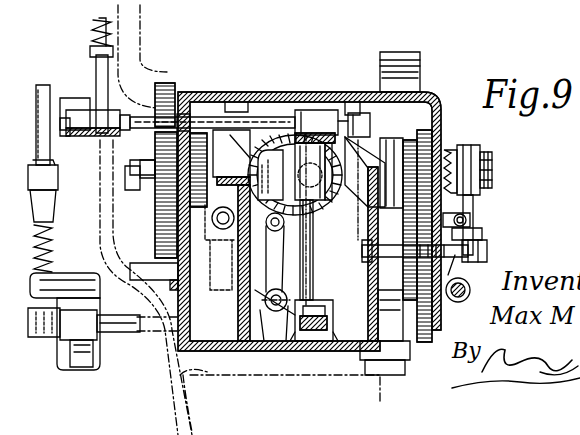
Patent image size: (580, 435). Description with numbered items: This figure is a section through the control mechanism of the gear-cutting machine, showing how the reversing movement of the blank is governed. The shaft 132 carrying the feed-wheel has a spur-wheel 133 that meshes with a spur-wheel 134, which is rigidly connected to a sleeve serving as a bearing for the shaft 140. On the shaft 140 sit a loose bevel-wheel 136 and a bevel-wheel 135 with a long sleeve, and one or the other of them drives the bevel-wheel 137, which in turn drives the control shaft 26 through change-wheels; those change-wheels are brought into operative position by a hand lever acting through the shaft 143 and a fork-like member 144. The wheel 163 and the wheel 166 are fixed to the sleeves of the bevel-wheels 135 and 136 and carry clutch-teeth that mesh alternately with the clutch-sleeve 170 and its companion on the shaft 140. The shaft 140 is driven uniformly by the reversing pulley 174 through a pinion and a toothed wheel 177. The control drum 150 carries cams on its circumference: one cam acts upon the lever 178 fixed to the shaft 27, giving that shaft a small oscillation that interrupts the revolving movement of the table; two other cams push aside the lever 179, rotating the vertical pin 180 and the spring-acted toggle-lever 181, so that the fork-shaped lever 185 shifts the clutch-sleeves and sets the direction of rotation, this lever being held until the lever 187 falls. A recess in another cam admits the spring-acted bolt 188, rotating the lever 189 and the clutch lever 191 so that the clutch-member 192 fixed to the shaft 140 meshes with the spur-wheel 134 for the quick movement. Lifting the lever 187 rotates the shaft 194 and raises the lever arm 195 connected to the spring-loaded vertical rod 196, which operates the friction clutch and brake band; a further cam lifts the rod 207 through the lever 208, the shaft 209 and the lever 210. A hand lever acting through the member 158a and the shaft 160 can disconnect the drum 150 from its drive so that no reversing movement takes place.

The vertical rod 196 is at (97, 71).
The lever arm 195 is at (92, 140).
The shaft 194 is at (218, 118).
The wheel 166 is at (170, 100).
The fork-like member 144 is at (155, 237).
The shaft 26 is at (155, 213).
The toothed wheel 177 is at (157, 192).
The rod 207 is at (50, 246).
The lever 208 is at (47, 338).
The shaft 209 is at (123, 335).
The shaft 143 is at (150, 283).
The lever 178 is at (240, 300).
The shaft 27 is at (276, 312).
The vertical pin 180 is at (332, 220).
The lever 181 is at (320, 330).
The lever 210 is at (290, 348).
The bevel-wheel 137 is at (270, 140).
The bevel-wheel 136 is at (260, 145).
The clutch-sleeve 170 is at (296, 130).
The lever 179 is at (322, 145).
The lever 185 is at (302, 110).
The lever 187 is at (355, 113).
The bevel-wheel 135 is at (380, 145).
The pulley 174 is at (410, 52).
The wheel 163 is at (412, 140).
The spur-wheel 134 is at (425, 140).
The bolt 188 is at (393, 252).
The clutch lever 191 is at (463, 150).
The clutch-member 192 is at (490, 157).
The shaft 140 is at (493, 170).
The shaft 160 is at (470, 216).
The member 158a is at (482, 237).
The lever 189 is at (488, 253).
The spur-wheel 133 is at (432, 322).
The shaft 132 is at (396, 332).
The drum 150 is at (386, 356).